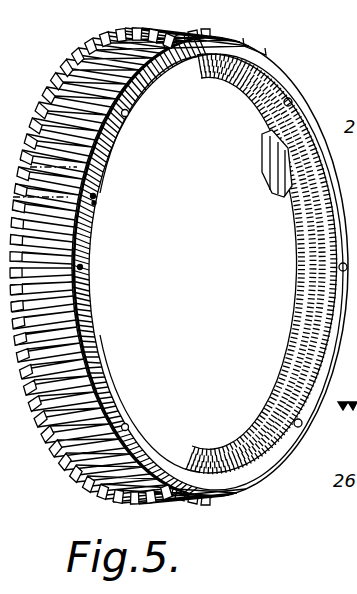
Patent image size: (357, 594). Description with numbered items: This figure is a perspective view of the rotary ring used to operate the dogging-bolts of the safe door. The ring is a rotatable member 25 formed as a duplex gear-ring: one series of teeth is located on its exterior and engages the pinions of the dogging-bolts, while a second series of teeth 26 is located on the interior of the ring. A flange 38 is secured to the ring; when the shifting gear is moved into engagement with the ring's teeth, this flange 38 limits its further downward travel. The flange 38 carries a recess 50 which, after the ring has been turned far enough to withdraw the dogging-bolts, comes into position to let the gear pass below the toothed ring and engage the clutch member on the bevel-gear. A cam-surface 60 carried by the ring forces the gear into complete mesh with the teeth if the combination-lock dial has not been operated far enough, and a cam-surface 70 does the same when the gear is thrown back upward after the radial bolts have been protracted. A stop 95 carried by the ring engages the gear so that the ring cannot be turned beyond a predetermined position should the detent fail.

The rotatable member 25 is at (183, 266).
The teeth 26 is at (317, 332).
The flange 38 is at (87, 330).
The recess 50 is at (100, 186).
The cam-surface 60 is at (277, 184).
The cam-surface 70 is at (96, 201).
The stop 95 is at (281, 201).